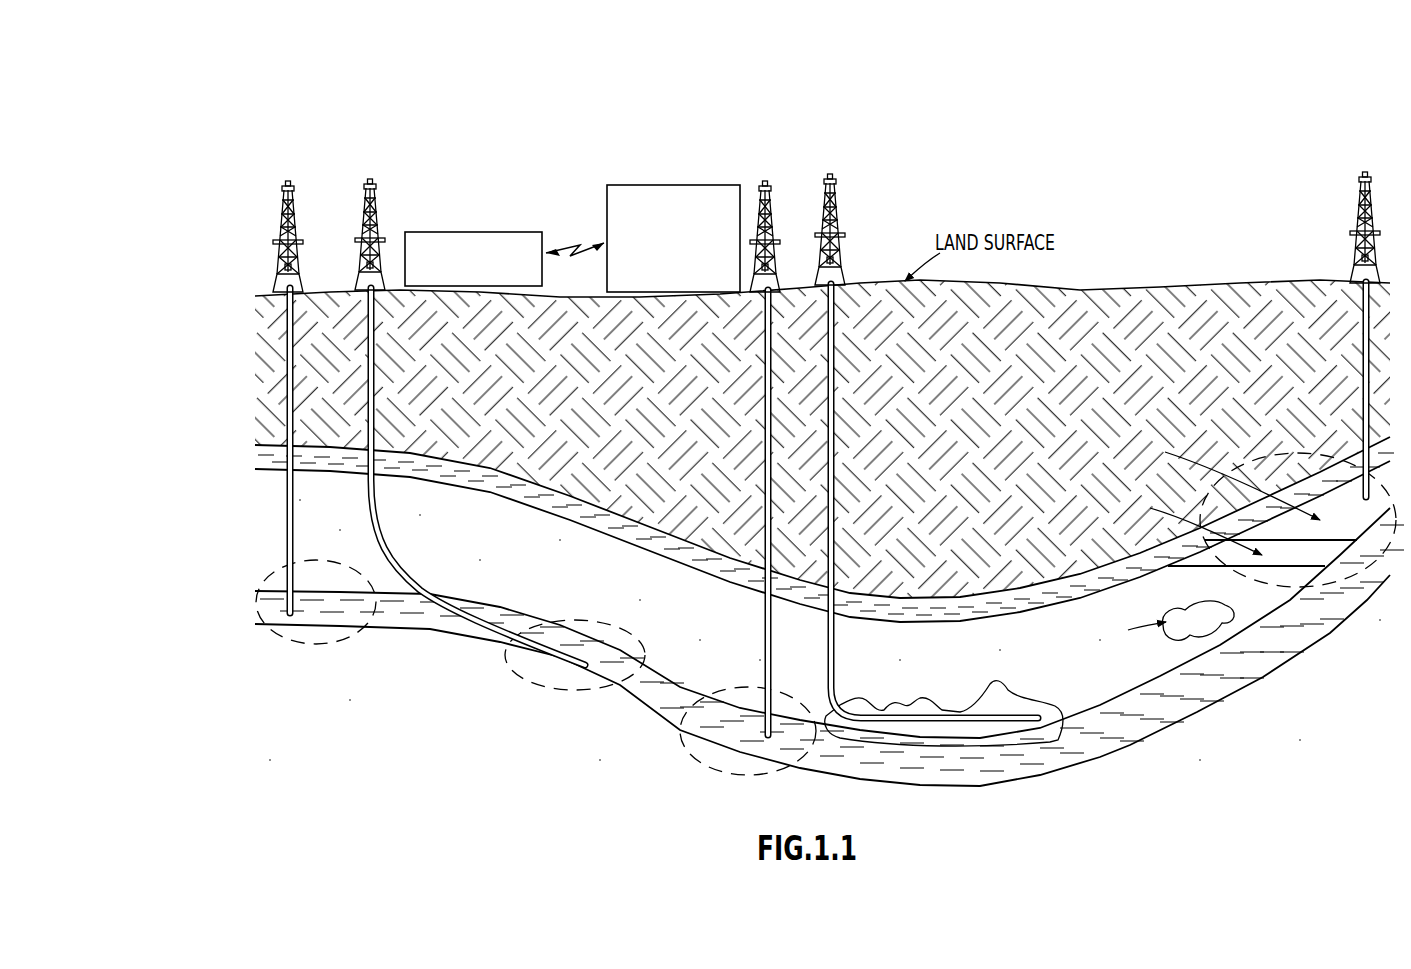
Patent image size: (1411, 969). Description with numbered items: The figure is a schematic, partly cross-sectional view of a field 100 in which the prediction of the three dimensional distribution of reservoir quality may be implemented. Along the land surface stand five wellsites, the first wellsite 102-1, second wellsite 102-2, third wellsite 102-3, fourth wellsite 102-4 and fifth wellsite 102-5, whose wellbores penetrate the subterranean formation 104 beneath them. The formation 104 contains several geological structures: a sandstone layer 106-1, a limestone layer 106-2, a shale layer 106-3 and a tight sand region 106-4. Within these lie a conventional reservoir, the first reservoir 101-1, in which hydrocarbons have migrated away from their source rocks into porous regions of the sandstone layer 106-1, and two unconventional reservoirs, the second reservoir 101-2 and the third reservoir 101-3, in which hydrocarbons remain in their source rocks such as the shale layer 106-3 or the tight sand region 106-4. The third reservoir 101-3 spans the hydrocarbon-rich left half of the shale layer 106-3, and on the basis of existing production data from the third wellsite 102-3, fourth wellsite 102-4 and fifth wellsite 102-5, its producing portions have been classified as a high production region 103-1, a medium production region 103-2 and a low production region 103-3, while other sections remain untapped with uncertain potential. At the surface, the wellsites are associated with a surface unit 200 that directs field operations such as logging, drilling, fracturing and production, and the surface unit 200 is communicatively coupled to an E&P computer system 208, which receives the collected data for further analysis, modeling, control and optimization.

The field 100 is at (992, 130).
The wellsite-1 102-1 is at (1350, 196).
The wellsite-2 102-2 is at (836, 170).
The wellsite-3 102-3 is at (758, 183).
The wellsite-4 102-4 is at (365, 180).
The wellsite-5 102-5 is at (283, 185).
The surface unit 200 is at (487, 283).
The E&P computer system 208 is at (689, 284).
The subterranean formation 104 is at (920, 441).
The sandstone layer 106-1 is at (570, 599).
The limestone layer 106-2 is at (492, 452).
The shale layer 106-3 is at (915, 757).
The tight sand region 106-4 is at (1085, 691).
The reservoir-1 101-1 is at (1283, 452).
The reservoir-2 101-2 is at (965, 700).
The reservoir-3 101-3 is at (655, 698).
The high production region 103-1 is at (343, 643).
The medium production region 103-2 is at (743, 773).
The low production region 103-3 is at (500, 672).